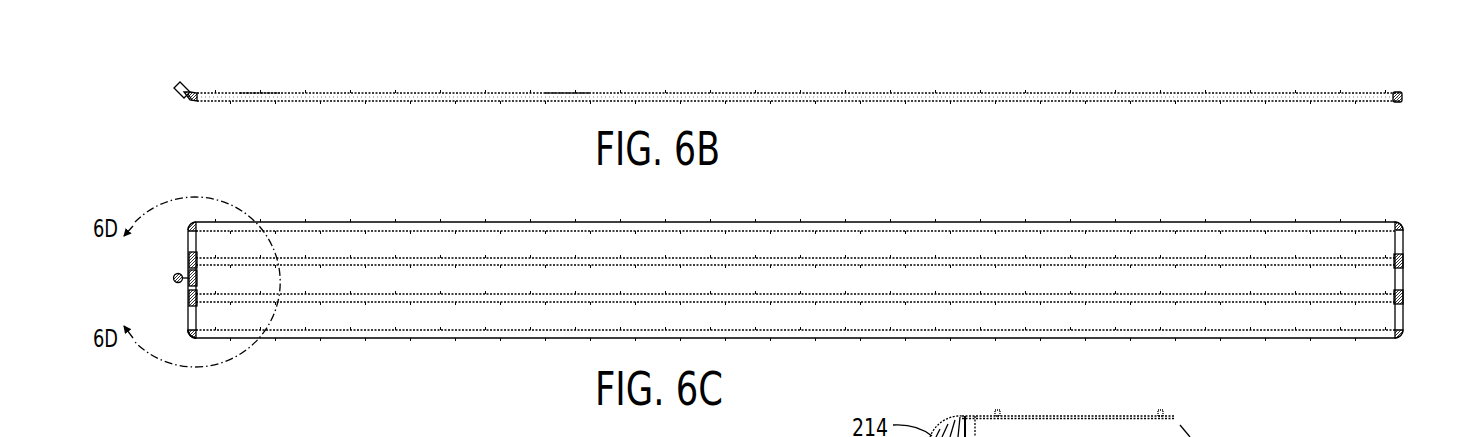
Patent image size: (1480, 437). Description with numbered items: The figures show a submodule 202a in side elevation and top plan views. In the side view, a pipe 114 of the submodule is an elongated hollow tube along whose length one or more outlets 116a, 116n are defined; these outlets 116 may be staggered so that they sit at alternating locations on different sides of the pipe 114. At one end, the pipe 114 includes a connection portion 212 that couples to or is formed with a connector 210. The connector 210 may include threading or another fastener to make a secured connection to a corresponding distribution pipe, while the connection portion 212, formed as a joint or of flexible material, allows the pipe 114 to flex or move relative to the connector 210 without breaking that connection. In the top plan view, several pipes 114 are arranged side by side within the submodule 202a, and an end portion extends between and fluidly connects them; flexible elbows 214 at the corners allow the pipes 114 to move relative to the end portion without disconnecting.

In FIG. 6B, the pipe 114 is at (718, 93).
In FIG. 6C, the outlets 116 is at (318, 338).
In FIG. 6B, the outlet 116a is at (257, 104).
In FIG. 6B, the outlet 116n is at (566, 104).
In FIG. 6C, the submodule 202a is at (1405, 262).
In FIG. 6B, the connector 210 is at (188, 84).
In FIG. 6C, the connector 210 is at (174, 277).
In FIG. 6B, the connection portion 212 is at (193, 100).
In FIG. 6C, the elbows 214 is at (196, 333).